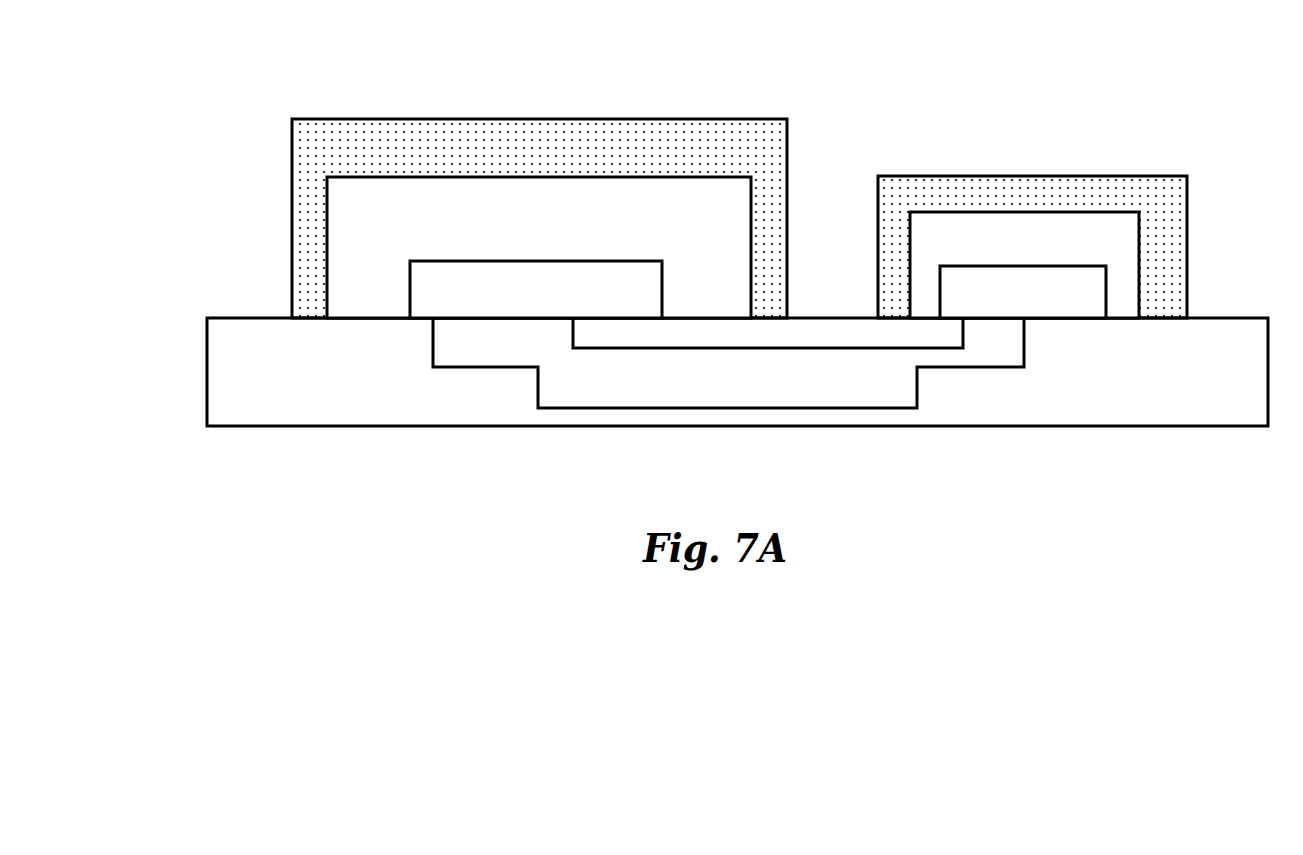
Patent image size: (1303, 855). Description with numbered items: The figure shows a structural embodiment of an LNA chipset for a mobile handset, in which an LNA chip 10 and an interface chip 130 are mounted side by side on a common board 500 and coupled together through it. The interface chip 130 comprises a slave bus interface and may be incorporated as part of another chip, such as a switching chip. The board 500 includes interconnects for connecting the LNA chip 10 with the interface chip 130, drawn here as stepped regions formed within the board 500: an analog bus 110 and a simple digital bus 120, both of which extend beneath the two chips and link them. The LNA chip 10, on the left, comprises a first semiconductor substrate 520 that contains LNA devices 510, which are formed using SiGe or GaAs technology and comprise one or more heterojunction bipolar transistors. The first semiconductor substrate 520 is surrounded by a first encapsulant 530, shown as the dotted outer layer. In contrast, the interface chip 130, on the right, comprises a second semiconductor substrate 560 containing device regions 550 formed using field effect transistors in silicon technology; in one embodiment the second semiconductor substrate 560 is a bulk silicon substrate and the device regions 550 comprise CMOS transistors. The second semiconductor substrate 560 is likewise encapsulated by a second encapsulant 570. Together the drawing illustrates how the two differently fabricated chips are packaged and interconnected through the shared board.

The LNA chip 10 is at (429, 50).
The analog bus 110 is at (768, 408).
The simple digital bus 120 is at (613, 348).
The interface chip 130 is at (1001, 141).
The board 500 is at (237, 400).
The LNA devices 510 is at (522, 295).
The first semiconductor substrate 520 is at (522, 223).
The first encapsulant 530 is at (522, 151).
The device regions 550 is at (1030, 306).
The second semiconductor substrate 560 is at (1030, 246).
The second encapsulant 570 is at (1030, 206).